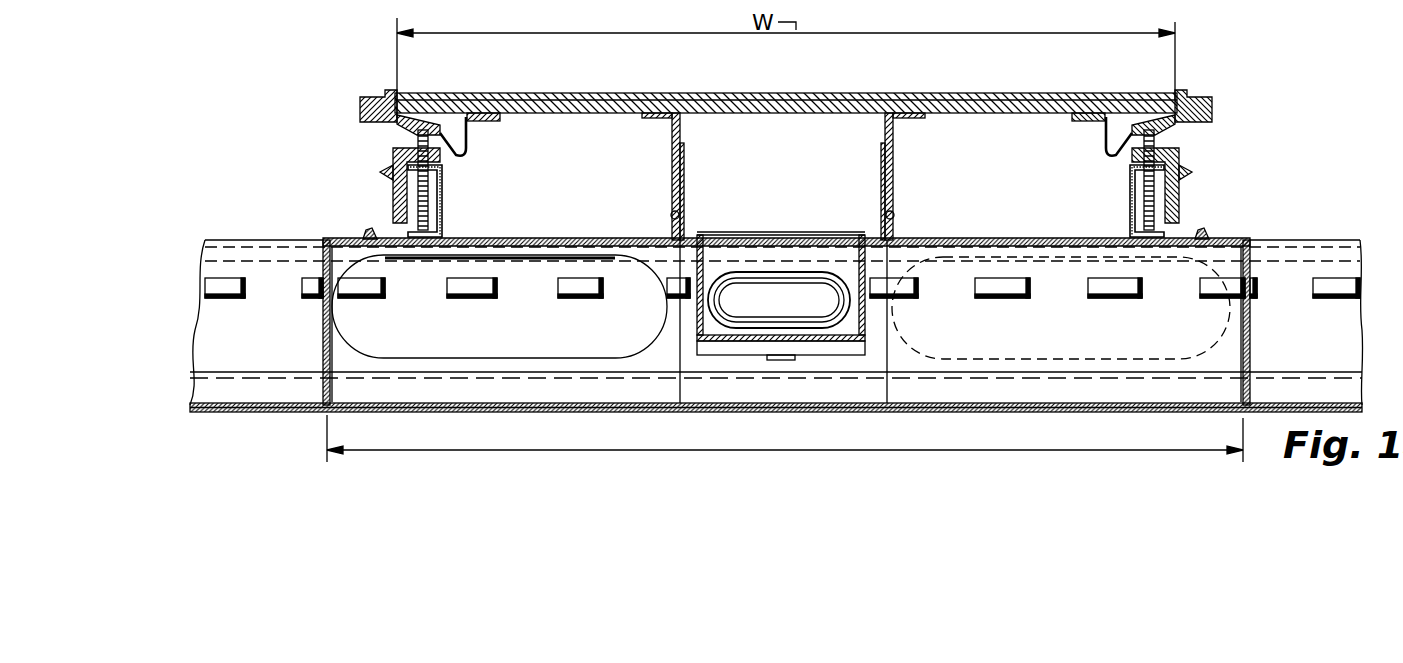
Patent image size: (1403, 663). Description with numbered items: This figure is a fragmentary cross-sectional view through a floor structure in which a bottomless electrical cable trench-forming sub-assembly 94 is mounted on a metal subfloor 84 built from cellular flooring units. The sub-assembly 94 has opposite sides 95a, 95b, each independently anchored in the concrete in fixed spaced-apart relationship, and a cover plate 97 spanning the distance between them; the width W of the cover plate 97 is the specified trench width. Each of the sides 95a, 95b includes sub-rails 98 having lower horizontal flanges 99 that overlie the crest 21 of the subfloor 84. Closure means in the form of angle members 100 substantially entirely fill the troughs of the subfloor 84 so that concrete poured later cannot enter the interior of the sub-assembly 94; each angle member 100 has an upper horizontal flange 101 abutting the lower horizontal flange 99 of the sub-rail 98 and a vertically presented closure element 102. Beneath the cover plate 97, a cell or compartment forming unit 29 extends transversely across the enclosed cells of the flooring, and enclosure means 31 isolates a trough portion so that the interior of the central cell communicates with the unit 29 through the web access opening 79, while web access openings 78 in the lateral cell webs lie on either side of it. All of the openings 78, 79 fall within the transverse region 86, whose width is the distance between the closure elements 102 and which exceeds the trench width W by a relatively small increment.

The crest 21 is at (222, 240).
The cell or compartment forming unit 29 is at (893, 158).
The enclosure means 31 is at (760, 228).
The web access opening 78 is at (455, 358).
The web access opening 79 is at (757, 326).
The metal subfloor 84 is at (248, 233).
The transverse region 86 is at (985, 450).
The bottomless electrical cable trench-forming sub-assembly 94 is at (1188, 76).
The side 95a is at (1122, 185).
The side 95b is at (443, 179).
The cover plate 97 is at (830, 105).
The sub-rail 98 is at (443, 222).
The lower horizontal flange 99 is at (388, 239).
The angle member 100 is at (322, 320).
The upper horizontal flange 101 is at (343, 240).
The vertically presented closure element 102 is at (325, 344).